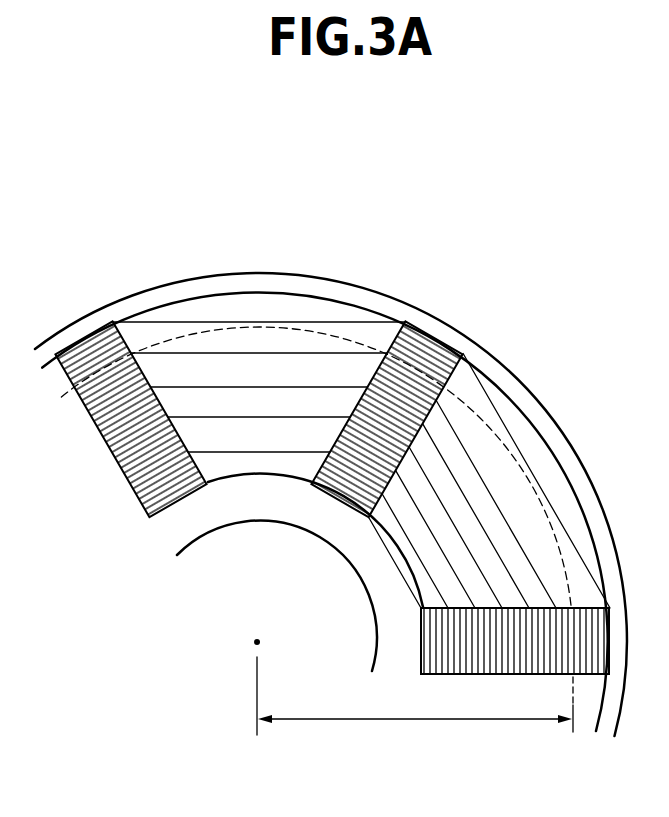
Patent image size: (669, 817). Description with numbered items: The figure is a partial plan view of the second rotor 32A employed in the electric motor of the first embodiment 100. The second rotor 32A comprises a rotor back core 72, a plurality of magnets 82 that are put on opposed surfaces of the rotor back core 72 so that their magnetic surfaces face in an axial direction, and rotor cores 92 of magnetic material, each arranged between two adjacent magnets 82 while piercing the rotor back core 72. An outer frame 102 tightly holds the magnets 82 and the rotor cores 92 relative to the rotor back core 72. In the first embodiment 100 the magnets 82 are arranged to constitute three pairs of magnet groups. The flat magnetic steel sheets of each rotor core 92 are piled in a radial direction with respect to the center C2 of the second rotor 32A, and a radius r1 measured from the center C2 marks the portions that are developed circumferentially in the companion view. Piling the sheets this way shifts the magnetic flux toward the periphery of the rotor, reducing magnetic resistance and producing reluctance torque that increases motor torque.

The first embodiment 100 is at (378, 173).
The second rotor 32A is at (400, 271).
The magnet 82 is at (60, 382).
The rotor core 92 is at (103, 337).
The outer frame 102 is at (604, 522).
The rotor back core 72 is at (372, 593).
The center of second rotor C2 is at (254, 642).
The radius r1 is at (415, 706).